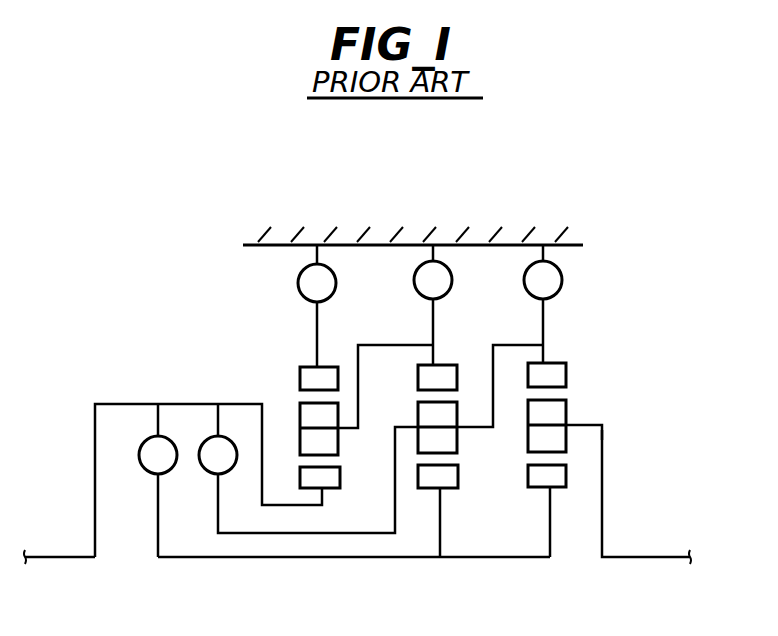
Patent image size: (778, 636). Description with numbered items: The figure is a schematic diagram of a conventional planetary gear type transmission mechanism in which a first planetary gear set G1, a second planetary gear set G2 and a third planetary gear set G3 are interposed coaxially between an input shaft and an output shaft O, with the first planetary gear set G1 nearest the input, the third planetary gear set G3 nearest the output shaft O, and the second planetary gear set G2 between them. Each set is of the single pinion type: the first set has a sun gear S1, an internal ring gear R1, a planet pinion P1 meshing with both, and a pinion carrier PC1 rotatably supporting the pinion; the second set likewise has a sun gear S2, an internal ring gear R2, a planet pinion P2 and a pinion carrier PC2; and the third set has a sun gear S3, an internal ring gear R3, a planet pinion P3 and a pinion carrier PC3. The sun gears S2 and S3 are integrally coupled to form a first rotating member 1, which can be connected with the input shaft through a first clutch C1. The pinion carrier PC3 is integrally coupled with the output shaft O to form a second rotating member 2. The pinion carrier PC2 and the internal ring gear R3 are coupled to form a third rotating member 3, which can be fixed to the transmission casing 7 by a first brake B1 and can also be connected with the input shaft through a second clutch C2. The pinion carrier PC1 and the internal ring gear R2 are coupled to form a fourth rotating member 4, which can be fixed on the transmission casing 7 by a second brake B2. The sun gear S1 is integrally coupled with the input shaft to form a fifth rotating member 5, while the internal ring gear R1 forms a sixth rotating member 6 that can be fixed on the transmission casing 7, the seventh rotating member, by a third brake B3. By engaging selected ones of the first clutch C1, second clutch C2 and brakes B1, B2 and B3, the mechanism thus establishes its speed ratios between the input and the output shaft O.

The transmission casing 7 is at (374, 226).
The third brake B3 is at (336, 283).
The second brake B2 is at (421, 294).
The first brake B1 is at (561, 282).
The sixth rotating member 6 is at (313, 328).
The fourth rotating member 4 is at (440, 323).
The third rotating member 3 is at (550, 322).
The fifth rotating member 5 is at (230, 400).
The internal ring gear of first planetary gear set R1 is at (300, 372).
The internal ring gear of second planetary gear set R2 is at (418, 378).
The internal ring gear of third planetary gear set R3 is at (566, 368).
The planet pinion of first planetary gear set P1 is at (300, 450).
The planet pinion of second planetary gear set P2 is at (457, 450).
The planet pinion of third planetary gear set P3 is at (566, 408).
The pinion carrier of first planetary gear set PC1 is at (352, 432).
The pinion carrier of second planetary gear set PC2 is at (466, 430).
The pinion carrier of third planetary gear set PC3 is at (595, 425).
The sun gear of first planetary gear set S1 is at (340, 483).
The sun gear of second planetary gear set S2 is at (458, 485).
The sun gear of third planetary gear set S3 is at (566, 478).
The first clutch C1 is at (148, 470).
The second clutch C2 is at (208, 470).
The first planetary gear set G1 is at (330, 510).
The second planetary gear set G2 is at (481, 500).
The third planetary gear set G3 is at (590, 390).
The first rotating member 1 is at (48, 556).
The second rotating member 2 is at (609, 519).
The output shaft O is at (663, 555).